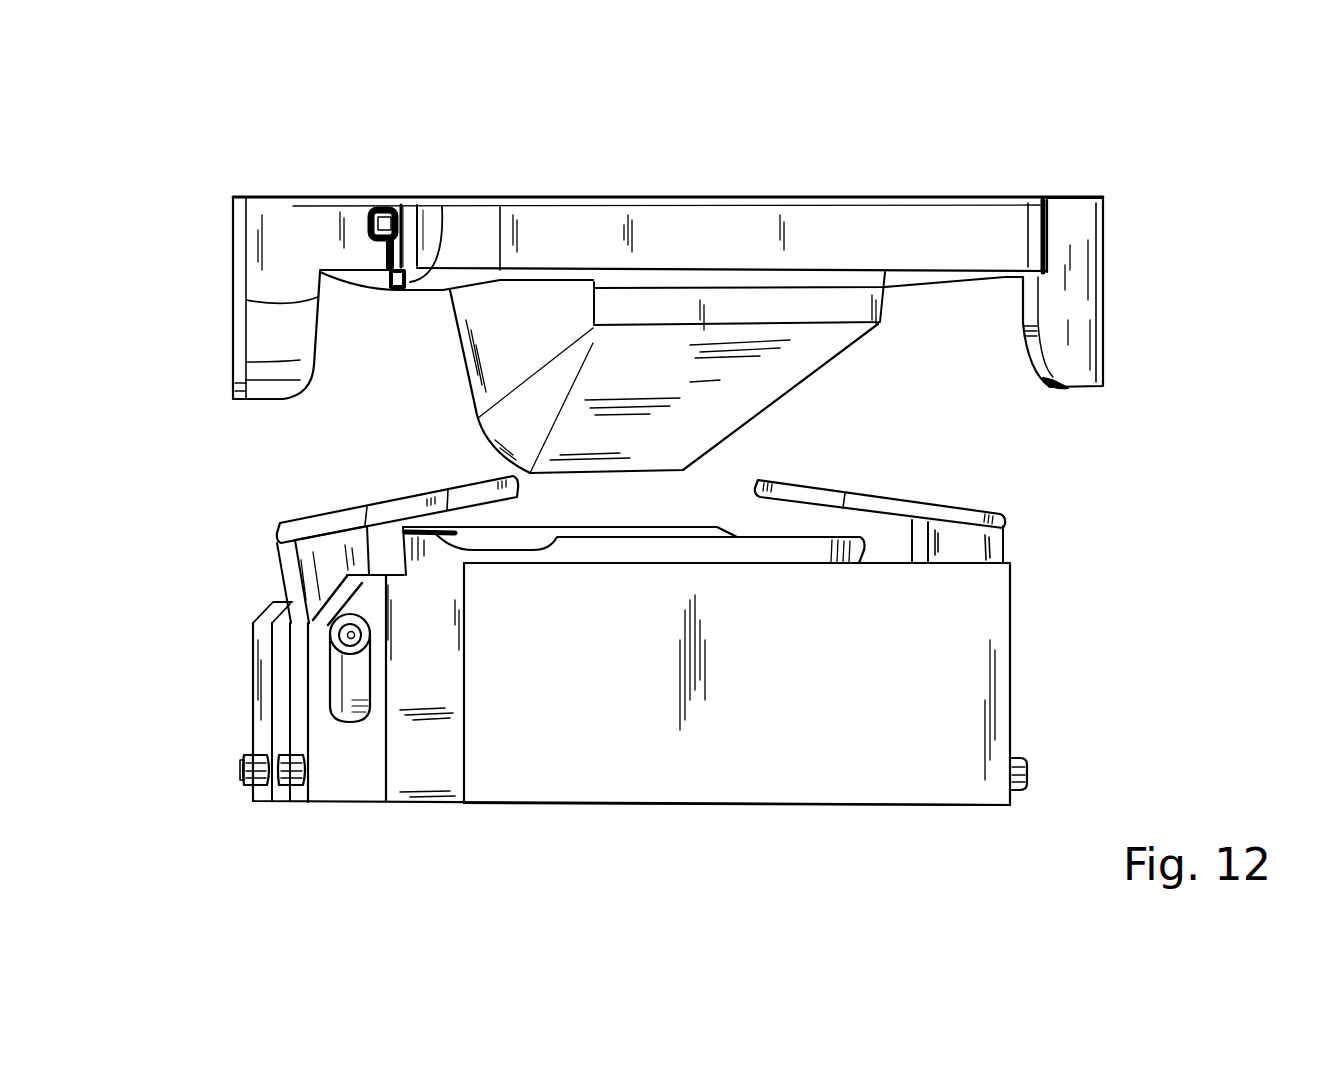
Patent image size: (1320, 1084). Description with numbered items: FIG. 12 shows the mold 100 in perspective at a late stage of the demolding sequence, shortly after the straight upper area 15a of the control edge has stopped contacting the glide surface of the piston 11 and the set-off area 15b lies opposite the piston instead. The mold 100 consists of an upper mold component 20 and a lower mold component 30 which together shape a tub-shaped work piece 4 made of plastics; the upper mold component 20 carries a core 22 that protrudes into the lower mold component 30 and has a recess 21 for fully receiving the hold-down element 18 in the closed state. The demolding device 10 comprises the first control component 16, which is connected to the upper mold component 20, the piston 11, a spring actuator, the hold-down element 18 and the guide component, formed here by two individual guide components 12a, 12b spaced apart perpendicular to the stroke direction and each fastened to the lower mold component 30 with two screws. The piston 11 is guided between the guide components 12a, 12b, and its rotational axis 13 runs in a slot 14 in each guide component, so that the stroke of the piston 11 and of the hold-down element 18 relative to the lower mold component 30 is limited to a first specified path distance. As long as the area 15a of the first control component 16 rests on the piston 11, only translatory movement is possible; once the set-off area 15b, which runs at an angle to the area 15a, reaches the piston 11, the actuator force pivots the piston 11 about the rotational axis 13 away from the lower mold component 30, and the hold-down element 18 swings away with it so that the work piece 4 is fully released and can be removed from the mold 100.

The demolding device 10 is at (193, 167).
The mold 100 is at (1096, 170).
The upper mold component 20 is at (677, 240).
The core 22 is at (653, 360).
The recess 21 is at (418, 275).
The first control component 16 is at (290, 280).
The straight upper area of the control edge 15a is at (246, 300).
The set-off area of the control edge 15b is at (246, 364).
The hold-down element 18 is at (475, 495).
The piston 11 is at (323, 557).
The first guide component 12a is at (262, 745).
The second guide component 12b is at (330, 742).
The slot 14 is at (347, 723).
The rotational axis 13 is at (360, 636).
The work piece 4 is at (565, 563).
The lower mold component 30 is at (684, 748).